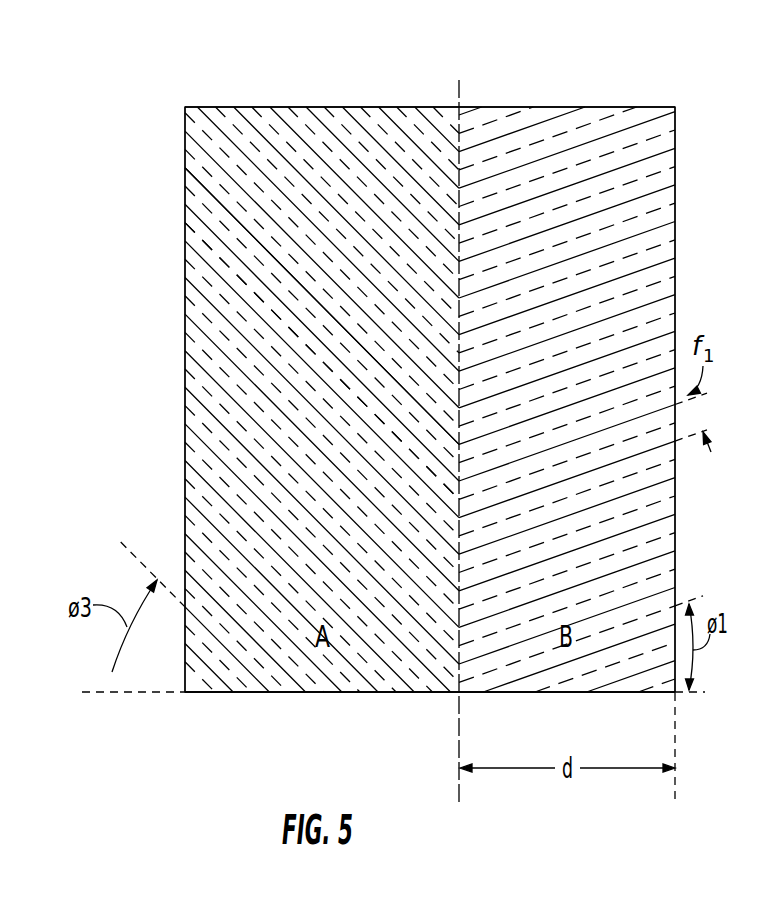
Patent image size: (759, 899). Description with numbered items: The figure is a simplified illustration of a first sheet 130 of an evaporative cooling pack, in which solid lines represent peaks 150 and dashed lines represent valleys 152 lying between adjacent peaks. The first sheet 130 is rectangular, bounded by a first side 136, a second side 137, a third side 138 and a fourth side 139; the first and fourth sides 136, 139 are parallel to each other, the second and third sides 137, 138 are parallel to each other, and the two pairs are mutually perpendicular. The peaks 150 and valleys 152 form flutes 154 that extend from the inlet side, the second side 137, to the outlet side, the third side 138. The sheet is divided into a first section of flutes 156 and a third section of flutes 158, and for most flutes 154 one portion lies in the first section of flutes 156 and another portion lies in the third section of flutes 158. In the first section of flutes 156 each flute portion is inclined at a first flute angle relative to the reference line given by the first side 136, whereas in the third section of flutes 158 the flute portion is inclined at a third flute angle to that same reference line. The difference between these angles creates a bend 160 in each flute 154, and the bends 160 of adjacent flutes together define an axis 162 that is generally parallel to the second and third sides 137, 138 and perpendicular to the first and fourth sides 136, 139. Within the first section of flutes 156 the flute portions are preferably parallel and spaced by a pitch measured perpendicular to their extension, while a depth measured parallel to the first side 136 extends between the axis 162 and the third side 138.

The first sheet 130 is at (260, 637).
The first side 136 is at (342, 693).
The second side 137 is at (185, 539).
The third side 138 is at (675, 540).
The fourth side 139 is at (520, 107).
The peaks 150 is at (185, 218).
The valleys 152 is at (200, 243).
The flutes 154 is at (242, 287).
The first section of flutes 156 is at (646, 709).
The third section of flutes 158 is at (418, 710).
The bend 160 is at (462, 481).
The axis 162 is at (458, 772).